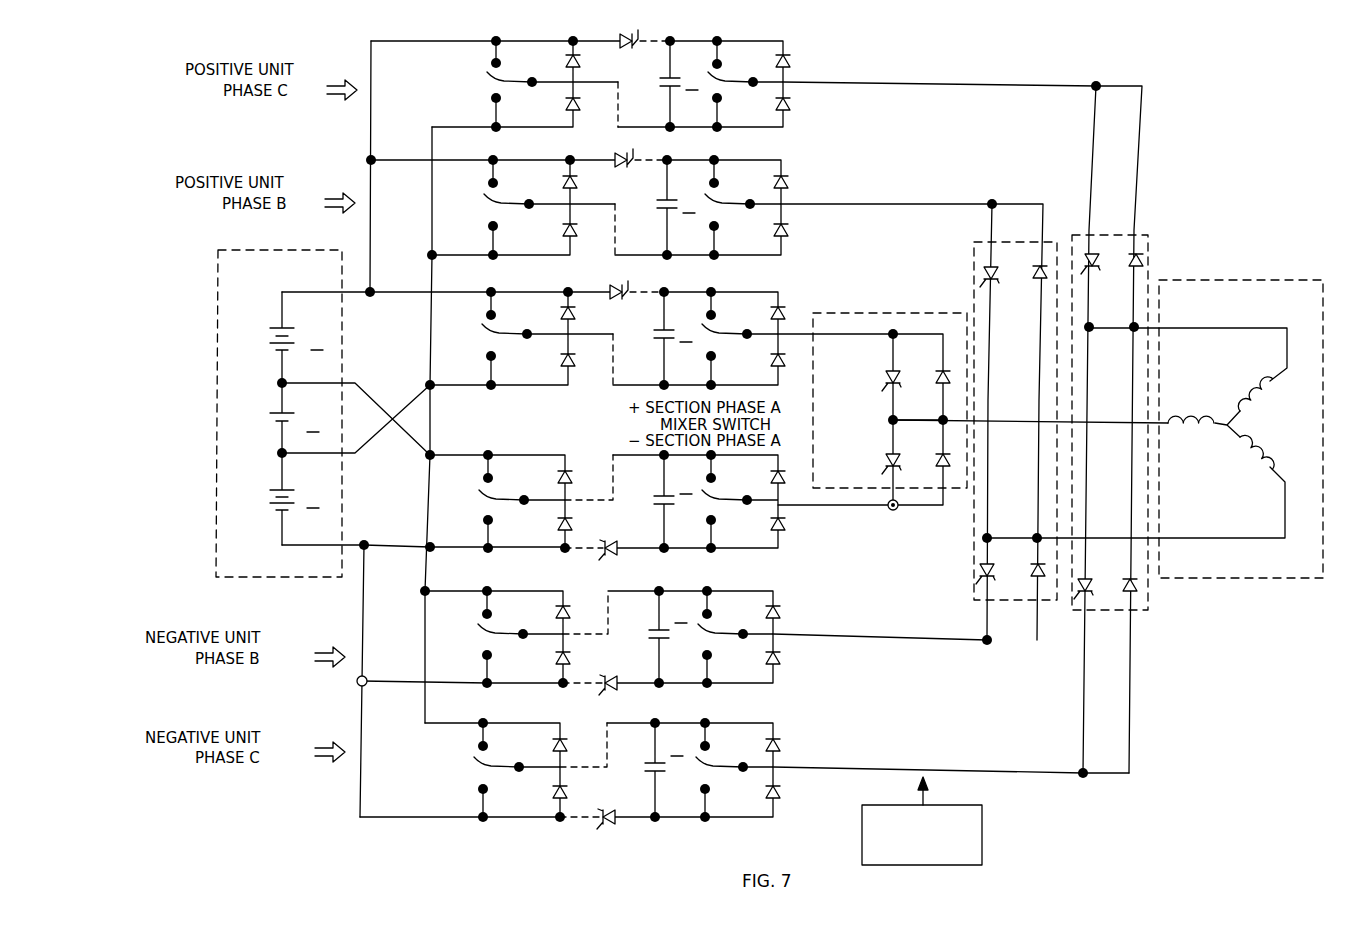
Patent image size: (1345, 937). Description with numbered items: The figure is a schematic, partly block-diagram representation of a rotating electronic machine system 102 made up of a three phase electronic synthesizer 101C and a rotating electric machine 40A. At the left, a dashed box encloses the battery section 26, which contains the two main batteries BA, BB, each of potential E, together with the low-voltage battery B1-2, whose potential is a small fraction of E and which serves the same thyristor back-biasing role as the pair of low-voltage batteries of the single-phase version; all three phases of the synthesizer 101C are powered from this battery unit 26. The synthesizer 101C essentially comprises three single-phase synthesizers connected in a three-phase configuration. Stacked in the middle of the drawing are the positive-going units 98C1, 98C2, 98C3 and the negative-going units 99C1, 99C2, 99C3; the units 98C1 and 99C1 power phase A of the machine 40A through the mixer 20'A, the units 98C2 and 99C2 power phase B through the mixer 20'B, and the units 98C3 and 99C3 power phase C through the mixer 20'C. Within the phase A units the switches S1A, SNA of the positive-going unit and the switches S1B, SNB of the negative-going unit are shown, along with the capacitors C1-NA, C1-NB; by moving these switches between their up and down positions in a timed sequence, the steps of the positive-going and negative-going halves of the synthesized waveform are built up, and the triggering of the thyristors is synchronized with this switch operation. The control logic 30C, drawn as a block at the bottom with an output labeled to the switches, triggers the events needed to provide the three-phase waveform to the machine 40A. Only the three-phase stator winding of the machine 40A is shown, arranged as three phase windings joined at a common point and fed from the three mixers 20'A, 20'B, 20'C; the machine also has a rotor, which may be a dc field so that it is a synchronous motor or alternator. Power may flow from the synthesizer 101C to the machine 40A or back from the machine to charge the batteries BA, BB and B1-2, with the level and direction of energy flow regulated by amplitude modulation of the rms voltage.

The battery section 26 is at (293, 413).
The positive-going unit 98C1 is at (565, 329).
The positive-going unit 98C2 is at (787, 174).
The positive-going unit 98C3 is at (783, 48).
The negative-going unit 99C1 is at (565, 505).
The negative-going unit 99C2 is at (779, 598).
The negative-going unit 99C3 is at (778, 730).
The mixer 20'A is at (872, 396).
The mixer 20'B is at (915, 422).
The mixer 20'C is at (1006, 429).
The rotating electric machine 40A is at (1241, 580).
The three phase electronic synthesizer 101C is at (1143, 747).
The rotating electronic machine system 102 is at (339, 801).
The control logic 30C is at (982, 865).
The battery BA is at (289, 339).
The battery B1-2 is at (290, 420).
The battery BB is at (287, 495).
The switch S1A is at (502, 333).
The switch S1B is at (502, 498).
The switch SNA is at (718, 336).
The switch SNB is at (718, 503).
The capacitor C1-NA is at (654, 340).
The capacitor C1-NB is at (650, 497).